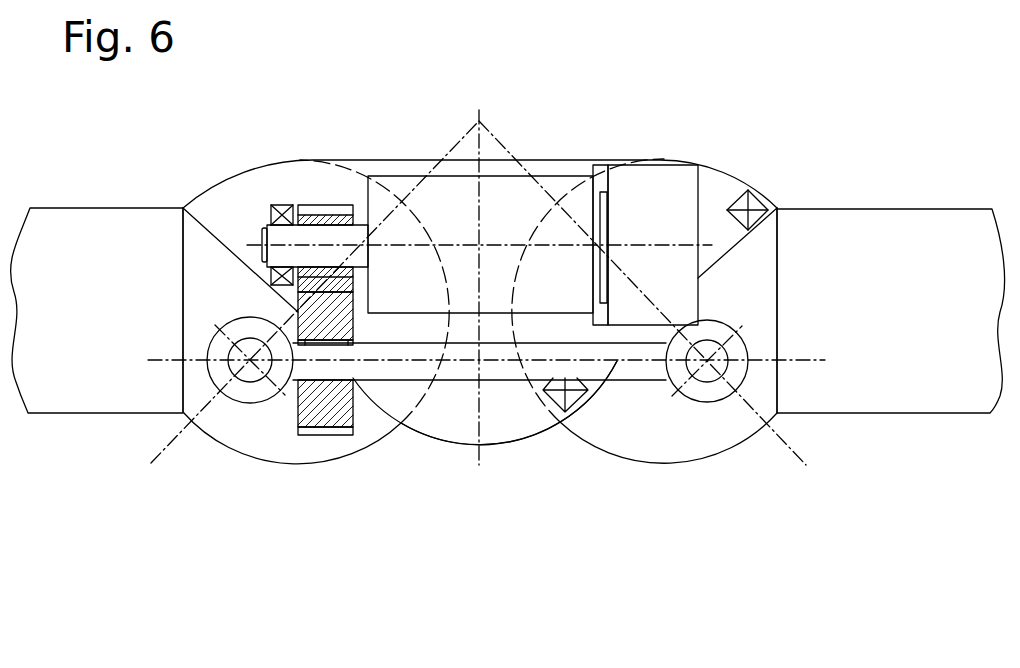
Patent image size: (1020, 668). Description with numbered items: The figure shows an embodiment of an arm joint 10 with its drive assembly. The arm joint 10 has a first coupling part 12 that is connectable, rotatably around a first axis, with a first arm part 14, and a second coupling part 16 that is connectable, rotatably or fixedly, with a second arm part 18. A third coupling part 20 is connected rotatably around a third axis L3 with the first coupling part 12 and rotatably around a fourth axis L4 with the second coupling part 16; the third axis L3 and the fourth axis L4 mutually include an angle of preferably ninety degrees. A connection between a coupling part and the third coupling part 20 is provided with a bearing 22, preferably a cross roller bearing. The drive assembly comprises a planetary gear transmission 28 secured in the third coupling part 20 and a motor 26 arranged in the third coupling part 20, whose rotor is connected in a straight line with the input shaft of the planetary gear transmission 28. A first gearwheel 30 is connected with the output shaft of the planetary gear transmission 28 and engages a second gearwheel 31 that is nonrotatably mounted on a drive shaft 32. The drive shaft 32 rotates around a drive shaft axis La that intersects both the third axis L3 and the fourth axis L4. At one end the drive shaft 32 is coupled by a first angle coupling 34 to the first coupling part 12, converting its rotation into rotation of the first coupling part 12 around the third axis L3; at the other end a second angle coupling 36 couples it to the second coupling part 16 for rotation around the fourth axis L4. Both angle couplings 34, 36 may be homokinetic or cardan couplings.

The arm joint 10 is at (664, 118).
The first coupling part 12 is at (202, 293).
The first arm part 14 is at (115, 293).
The second coupling part 16 is at (739, 287).
The second arm part 18 is at (827, 296).
The third coupling part 20 is at (495, 422).
The bearing 22 is at (753, 203).
The motor 26 is at (641, 197).
The planetary gear transmission 28 is at (508, 200).
The first gearwheel 30 is at (330, 207).
The second gearwheel 31 is at (326, 412).
The drive shaft 32 is at (463, 370).
The first angle coupling 34 is at (250, 382).
The second angle coupling 36 is at (722, 366).
The third axis L3 is at (174, 446).
The fourth axis L4 is at (782, 447).
The drive shaft axis La is at (587, 440).